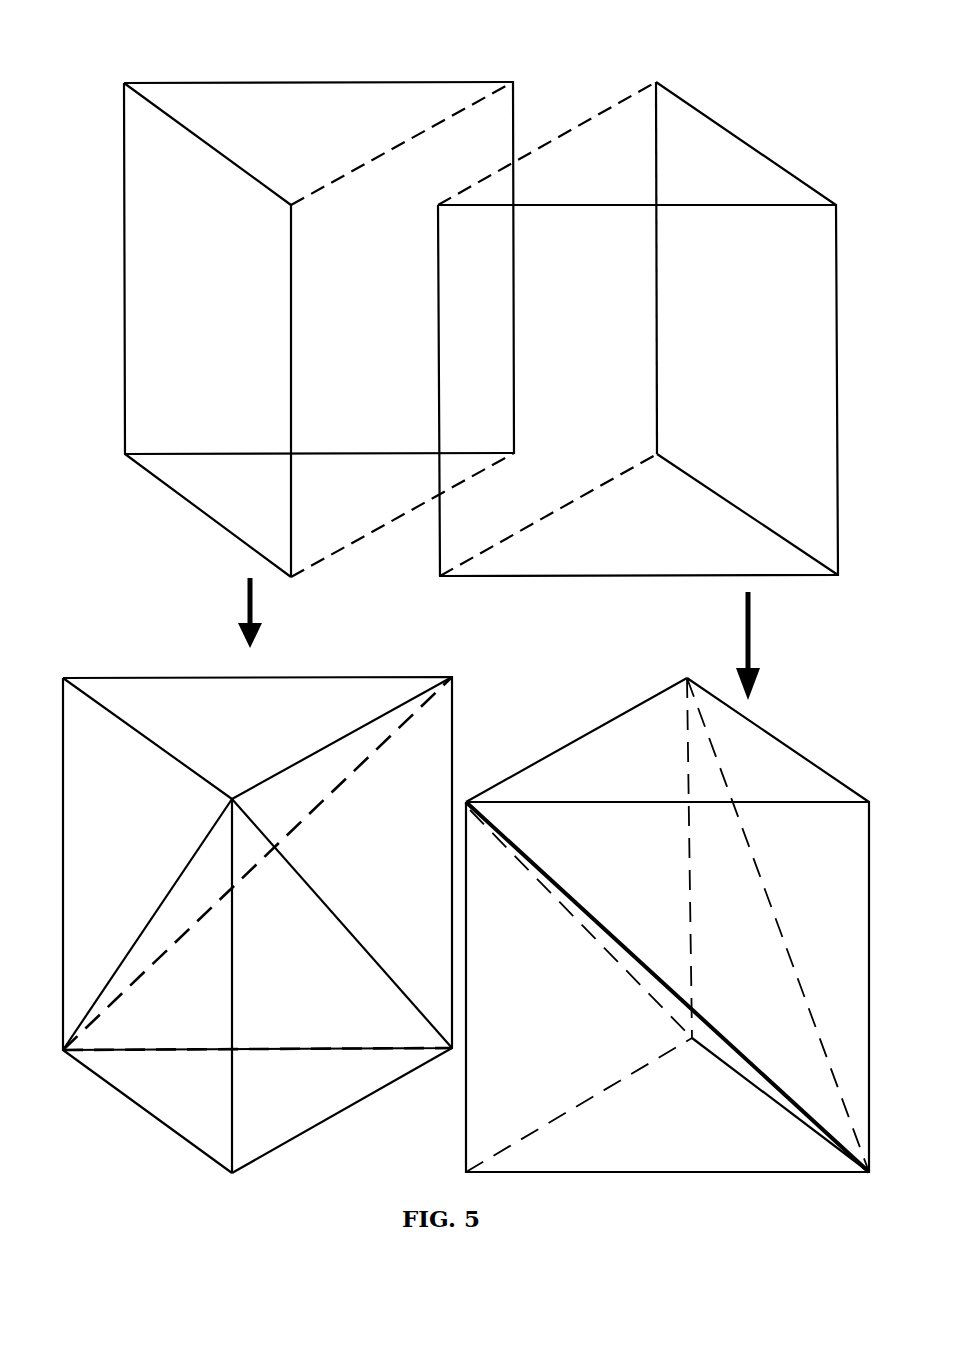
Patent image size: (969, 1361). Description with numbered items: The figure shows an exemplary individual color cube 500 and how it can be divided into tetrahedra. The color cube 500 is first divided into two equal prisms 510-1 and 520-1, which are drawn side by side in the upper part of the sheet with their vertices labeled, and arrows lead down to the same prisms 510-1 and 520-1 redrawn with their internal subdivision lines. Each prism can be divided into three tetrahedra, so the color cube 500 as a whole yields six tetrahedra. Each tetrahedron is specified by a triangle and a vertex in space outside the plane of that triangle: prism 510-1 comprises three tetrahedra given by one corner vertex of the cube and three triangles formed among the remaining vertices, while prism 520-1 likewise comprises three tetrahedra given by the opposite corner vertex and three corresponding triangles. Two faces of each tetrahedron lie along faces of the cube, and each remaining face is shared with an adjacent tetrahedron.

The individual color cube 500 is at (467, 624).
The prism 510-1 is at (289, 629).
The prism 520-1 is at (659, 635).